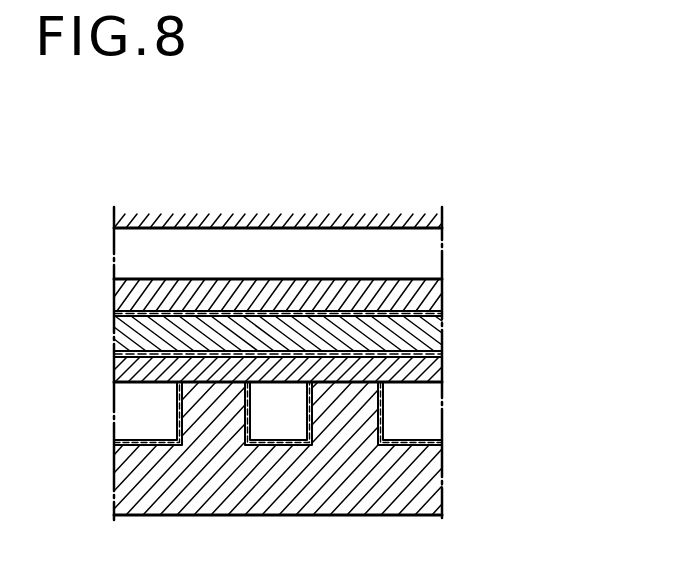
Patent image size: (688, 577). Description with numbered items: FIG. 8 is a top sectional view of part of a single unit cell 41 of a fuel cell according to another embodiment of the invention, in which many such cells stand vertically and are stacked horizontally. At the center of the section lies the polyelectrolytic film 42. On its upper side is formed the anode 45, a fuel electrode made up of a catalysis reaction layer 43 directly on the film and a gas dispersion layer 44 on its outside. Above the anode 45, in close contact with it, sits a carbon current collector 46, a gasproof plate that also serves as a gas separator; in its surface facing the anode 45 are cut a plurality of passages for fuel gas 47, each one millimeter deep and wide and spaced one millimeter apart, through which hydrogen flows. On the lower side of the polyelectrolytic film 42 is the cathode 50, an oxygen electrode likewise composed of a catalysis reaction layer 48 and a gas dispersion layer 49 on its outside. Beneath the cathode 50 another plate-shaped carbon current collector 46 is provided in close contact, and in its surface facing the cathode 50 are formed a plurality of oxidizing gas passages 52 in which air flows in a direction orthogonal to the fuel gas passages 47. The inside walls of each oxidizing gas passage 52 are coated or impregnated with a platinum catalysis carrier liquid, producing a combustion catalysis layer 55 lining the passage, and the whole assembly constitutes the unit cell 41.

The unit cell 41 is at (450, 200).
The polyelectrolytic film 42 is at (435, 332).
The catalysis reaction layer 43 is at (441, 312).
The gas dispersion layer 44 is at (441, 288).
The anode 45 is at (346, 273).
The carbon current collector 46 is at (183, 223).
The passage for fuel gas 47 is at (262, 240).
The catalysis reaction layer 48 is at (442, 354).
The gas dispersion layer 49 is at (432, 373).
The cathode 50 is at (356, 395).
The oxidizing gas passage 52 is at (135, 412).
The combustion catalysis layer 55 is at (138, 446).